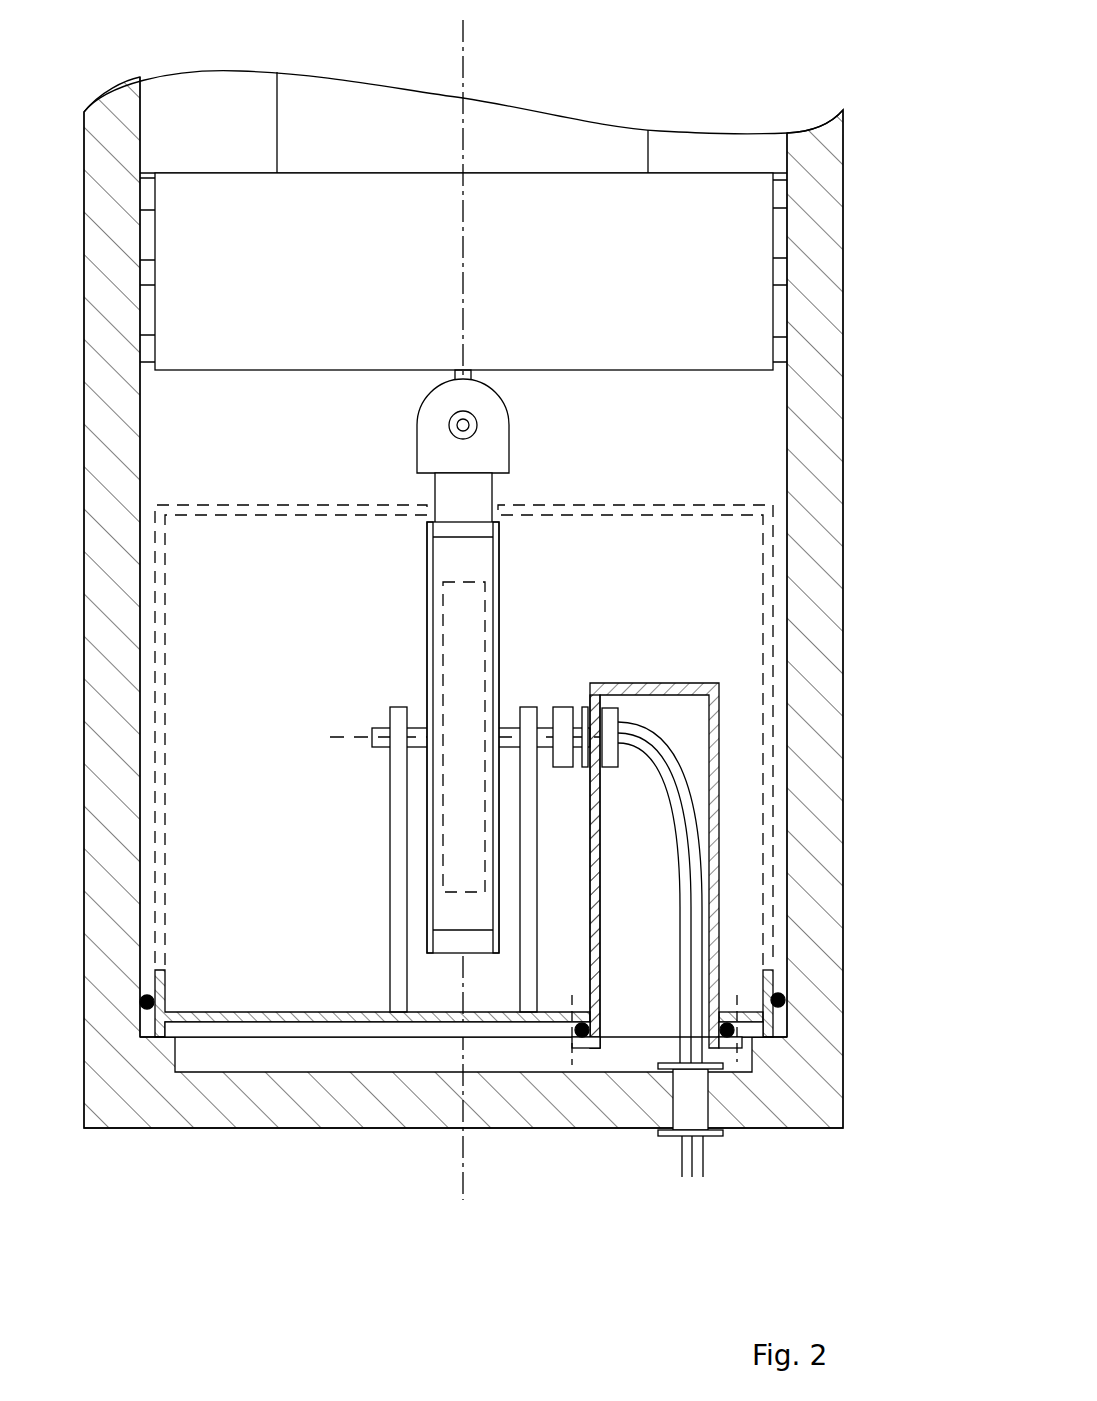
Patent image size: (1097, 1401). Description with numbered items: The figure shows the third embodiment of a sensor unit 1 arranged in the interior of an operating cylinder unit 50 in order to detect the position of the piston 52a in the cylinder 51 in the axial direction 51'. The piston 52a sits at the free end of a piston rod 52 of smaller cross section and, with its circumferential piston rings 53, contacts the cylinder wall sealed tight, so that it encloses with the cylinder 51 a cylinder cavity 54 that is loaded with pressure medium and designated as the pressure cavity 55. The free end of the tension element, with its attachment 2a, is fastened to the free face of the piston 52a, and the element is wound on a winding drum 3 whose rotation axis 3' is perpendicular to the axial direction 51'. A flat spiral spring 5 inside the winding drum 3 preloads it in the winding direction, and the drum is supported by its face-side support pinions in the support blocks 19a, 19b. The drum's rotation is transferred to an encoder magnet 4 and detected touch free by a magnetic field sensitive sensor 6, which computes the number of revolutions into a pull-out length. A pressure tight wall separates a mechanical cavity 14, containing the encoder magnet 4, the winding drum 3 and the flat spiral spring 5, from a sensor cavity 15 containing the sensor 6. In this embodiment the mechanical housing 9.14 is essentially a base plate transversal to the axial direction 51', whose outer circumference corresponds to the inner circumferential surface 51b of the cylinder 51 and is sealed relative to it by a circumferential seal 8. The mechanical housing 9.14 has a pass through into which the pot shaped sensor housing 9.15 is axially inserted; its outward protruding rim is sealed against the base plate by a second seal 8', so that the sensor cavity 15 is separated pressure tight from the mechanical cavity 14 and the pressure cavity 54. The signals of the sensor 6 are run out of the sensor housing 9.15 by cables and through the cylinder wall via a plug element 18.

The operating cylinder unit 50 is at (818, 77).
The cylinder 51 is at (496, 599).
The axial direction 51' is at (509, 610).
The inner circumferential surface 51b is at (787, 770).
The piston rod 52 is at (280, 137).
The piston 52a is at (464, 277).
The piston rings 53 is at (775, 343).
The cylinder cavity 54 is at (695, 373).
The pressure cavity 55 is at (228, 122).
The sensor unit 1 is at (230, 483).
The coupling eye 2a is at (478, 425).
The winding drum 3 is at (433, 737).
The rotation axis 3' is at (459, 714).
The encoder magnet 4 is at (562, 713).
The flat spiral spring 5 is at (440, 628).
The sensor 6 is at (620, 718).
The mechanical cavity 14 is at (464, 735).
The sensor cavity 15 is at (654, 865).
The mechanical housing 9.14 is at (162, 687).
The sensor housing 9.15 is at (596, 940).
The support block 19a is at (400, 875).
The support block 19b is at (523, 862).
The seal 8 is at (511, 981).
The second seal 8' is at (701, 1057).
The plug element 18 is at (690, 1095).